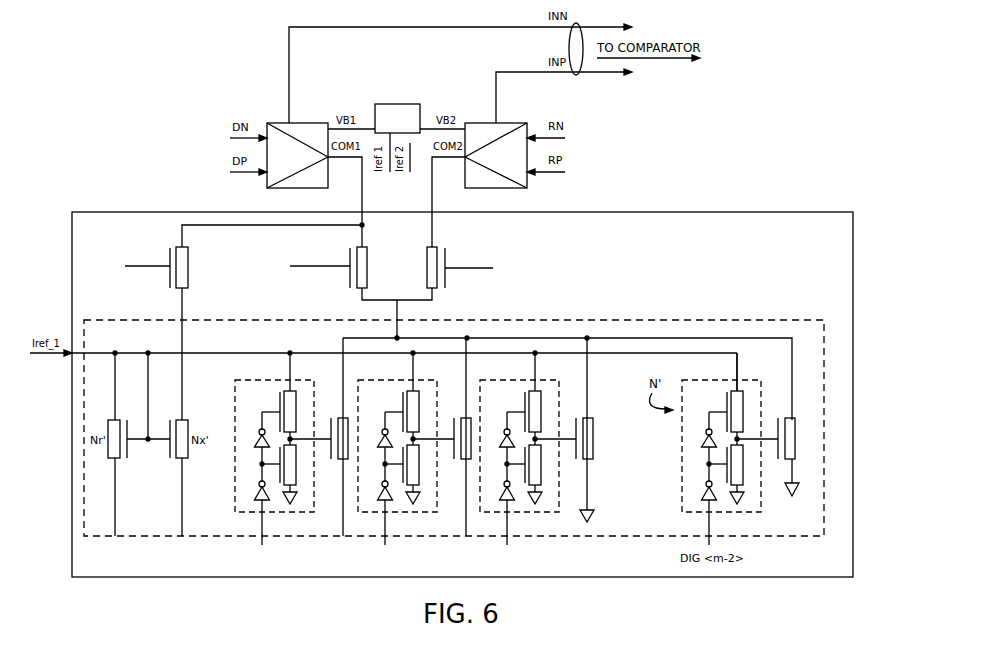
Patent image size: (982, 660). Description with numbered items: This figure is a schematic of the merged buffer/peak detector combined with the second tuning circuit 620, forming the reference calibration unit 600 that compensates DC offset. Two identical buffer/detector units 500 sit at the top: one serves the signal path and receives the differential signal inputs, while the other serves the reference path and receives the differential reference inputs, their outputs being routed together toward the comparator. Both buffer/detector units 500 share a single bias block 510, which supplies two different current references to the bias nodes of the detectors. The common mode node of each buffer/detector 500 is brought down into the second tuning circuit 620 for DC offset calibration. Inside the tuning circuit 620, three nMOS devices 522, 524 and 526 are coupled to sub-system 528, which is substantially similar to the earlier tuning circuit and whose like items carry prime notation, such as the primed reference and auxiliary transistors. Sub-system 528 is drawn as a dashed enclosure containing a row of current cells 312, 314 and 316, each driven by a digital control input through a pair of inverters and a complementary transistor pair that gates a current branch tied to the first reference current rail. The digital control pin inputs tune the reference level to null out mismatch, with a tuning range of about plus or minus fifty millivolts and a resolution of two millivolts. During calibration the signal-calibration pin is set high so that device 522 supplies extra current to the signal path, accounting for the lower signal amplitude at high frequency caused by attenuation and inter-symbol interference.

The buffer/detector 500 is at (274, 168).
The bias block 510 is at (411, 128).
The nMOS device 522 is at (220, 321).
The nMOS device 524 is at (310, 271).
The nMOS device 526 is at (482, 272).
The current cell DIG 0 312 is at (331, 385).
The current cell DIG 1 314 is at (454, 385).
The current cell DIG 2 316 is at (574, 385).
The sub-system 528 is at (497, 428).
The IDAC-2 620 is at (834, 568).
The reference calibration unit 600 is at (848, 610).